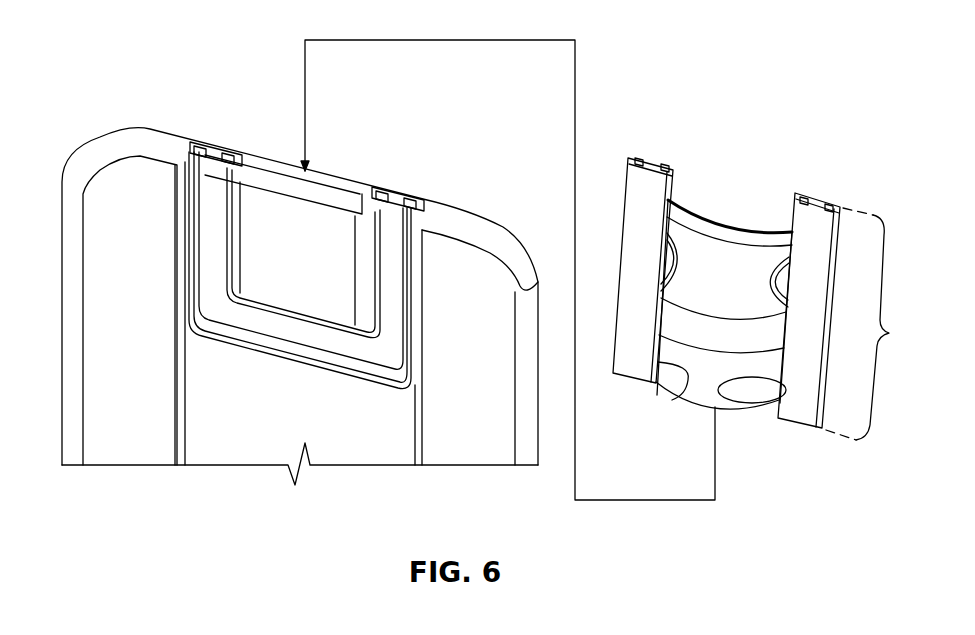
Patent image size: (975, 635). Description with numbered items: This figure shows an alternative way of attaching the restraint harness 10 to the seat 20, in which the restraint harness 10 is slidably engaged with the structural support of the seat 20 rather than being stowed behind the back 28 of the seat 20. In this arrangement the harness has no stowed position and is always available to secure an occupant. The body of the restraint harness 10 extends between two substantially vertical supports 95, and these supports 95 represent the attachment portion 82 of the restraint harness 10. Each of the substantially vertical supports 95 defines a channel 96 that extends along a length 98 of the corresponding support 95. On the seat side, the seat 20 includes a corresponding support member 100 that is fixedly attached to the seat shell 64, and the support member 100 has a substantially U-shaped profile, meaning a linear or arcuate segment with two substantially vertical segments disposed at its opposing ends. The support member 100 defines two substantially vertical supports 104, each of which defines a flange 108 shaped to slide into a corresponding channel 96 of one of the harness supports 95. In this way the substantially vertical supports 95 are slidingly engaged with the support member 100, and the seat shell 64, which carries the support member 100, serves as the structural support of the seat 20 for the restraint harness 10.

The restraint harness 10 is at (715, 208).
The seat 20 is at (128, 196).
The back 28 is at (130, 253).
The seat shell 64 is at (112, 391).
The attachment portion 82 is at (792, 432).
The substantially vertical supports 95 is at (641, 231).
The channel 96 is at (655, 150).
The length 98 is at (875, 324).
The support member 100 is at (378, 392).
The substantially vertical supports 104 is at (368, 251).
The flange 108 is at (220, 150).